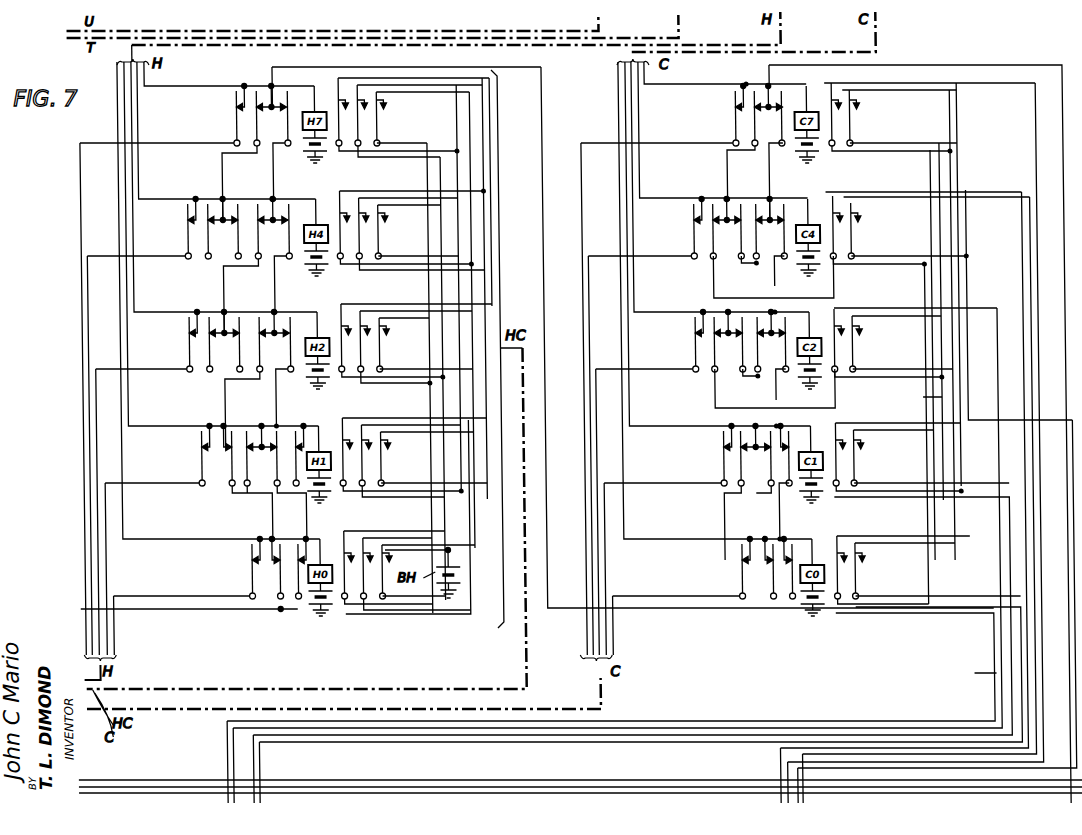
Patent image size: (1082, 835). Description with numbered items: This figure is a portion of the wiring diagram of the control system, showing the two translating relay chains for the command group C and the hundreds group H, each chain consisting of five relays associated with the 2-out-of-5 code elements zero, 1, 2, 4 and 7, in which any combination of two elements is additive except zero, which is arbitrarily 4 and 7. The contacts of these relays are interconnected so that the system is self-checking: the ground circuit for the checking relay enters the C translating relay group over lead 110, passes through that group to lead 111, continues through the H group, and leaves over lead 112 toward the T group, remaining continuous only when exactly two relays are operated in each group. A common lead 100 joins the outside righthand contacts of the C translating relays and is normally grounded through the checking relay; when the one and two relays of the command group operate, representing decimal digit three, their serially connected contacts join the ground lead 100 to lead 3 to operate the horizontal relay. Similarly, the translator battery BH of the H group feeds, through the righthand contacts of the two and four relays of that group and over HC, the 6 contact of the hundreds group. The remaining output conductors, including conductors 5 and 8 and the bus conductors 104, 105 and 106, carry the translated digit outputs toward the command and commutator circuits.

The code element 1 is at (781, 718).
The code element 2 is at (815, 720).
The lead 3 is at (691, 734).
The code element 4 is at (726, 737).
The conductor 5 is at (771, 752).
The 6 contact 6 is at (857, 749).
The code element 7 is at (779, 768).
The conductor 8 is at (876, 763).
The common lead 100 is at (944, 535).
The conductor 104 is at (93, 779).
The conductor 105 is at (87, 790).
The conductor 106 is at (133, 790).
The lead 110 is at (985, 60).
The lead 111 is at (542, 240).
The lead 112 is at (175, 612).